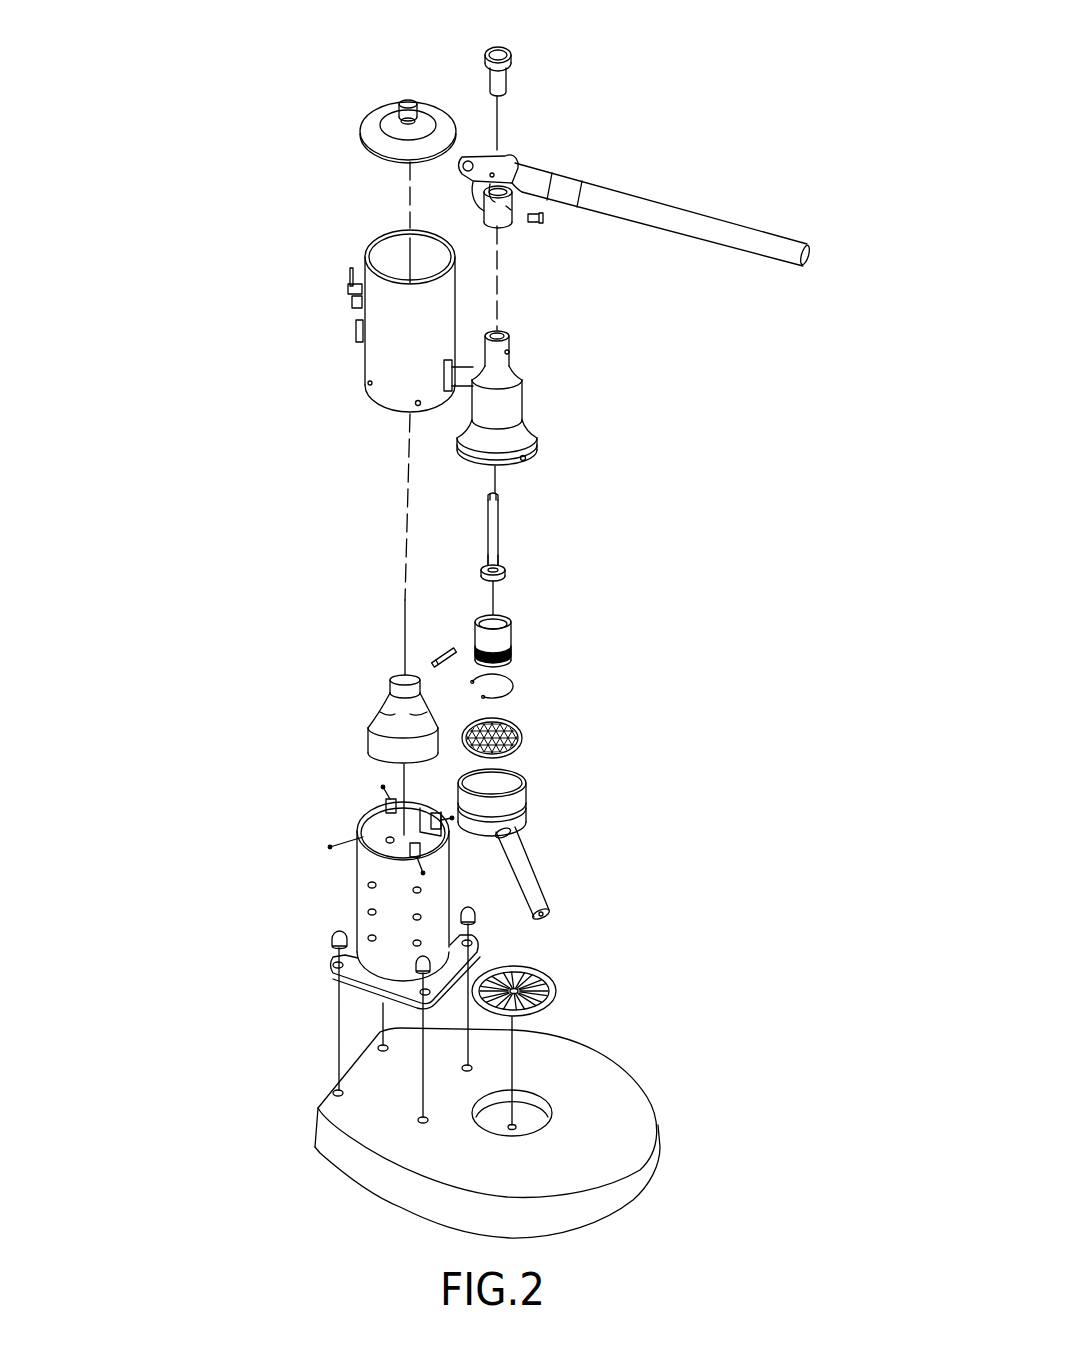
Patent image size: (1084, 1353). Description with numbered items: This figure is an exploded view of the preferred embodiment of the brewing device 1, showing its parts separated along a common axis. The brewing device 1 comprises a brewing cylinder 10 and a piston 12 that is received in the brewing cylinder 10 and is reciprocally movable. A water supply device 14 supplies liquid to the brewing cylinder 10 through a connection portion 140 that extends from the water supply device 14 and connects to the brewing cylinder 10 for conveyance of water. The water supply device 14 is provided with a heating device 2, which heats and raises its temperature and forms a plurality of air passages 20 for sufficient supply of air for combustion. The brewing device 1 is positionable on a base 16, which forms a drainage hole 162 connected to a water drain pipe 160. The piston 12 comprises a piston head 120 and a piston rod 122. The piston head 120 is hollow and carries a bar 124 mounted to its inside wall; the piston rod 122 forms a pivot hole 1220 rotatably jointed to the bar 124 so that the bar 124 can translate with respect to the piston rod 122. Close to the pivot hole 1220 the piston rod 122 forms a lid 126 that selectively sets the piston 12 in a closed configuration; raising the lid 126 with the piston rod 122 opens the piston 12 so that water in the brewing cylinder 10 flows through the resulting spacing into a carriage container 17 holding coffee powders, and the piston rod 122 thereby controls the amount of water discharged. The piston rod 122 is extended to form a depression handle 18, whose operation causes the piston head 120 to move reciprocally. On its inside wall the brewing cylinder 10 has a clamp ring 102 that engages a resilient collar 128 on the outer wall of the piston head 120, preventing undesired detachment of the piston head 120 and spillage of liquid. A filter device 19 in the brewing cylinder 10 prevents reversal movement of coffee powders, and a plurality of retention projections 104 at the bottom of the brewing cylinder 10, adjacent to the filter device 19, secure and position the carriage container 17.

The brewing device 1 is at (685, 178).
The heating device 2 is at (345, 760).
The brewing cylinder 10 is at (597, 412).
The piston 12 is at (630, 512).
The water supply device 14 is at (384, 235).
The base 16 is at (479, 1131).
The carriage container 17 is at (530, 813).
The depression handle 18 is at (746, 231).
The filter device 19 is at (522, 738).
The air passages 20 is at (369, 886).
The clamp ring 102 is at (514, 687).
The retention projections 104 is at (528, 458).
The piston head 120 is at (596, 614).
The piston rod 122 is at (497, 533).
The bar 124 is at (433, 657).
The lid 126 is at (483, 573).
The resilient collar 128 is at (507, 640).
The connection portion 140 is at (455, 378).
The water drain pipe 160 is at (337, 1082).
The drainage hole 162 is at (512, 1128).
The pivot hole 1220 is at (487, 557).